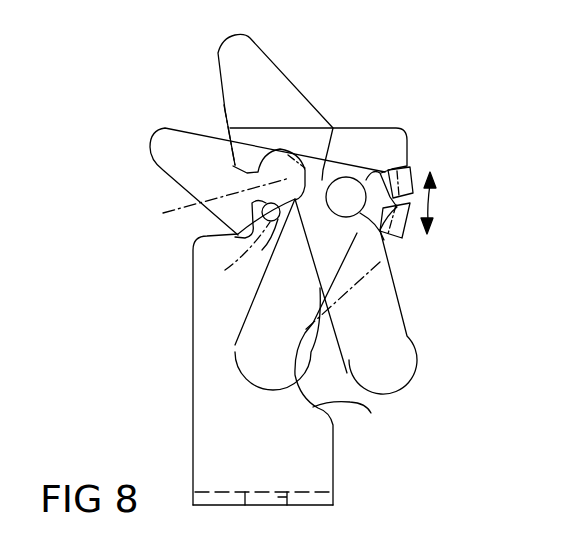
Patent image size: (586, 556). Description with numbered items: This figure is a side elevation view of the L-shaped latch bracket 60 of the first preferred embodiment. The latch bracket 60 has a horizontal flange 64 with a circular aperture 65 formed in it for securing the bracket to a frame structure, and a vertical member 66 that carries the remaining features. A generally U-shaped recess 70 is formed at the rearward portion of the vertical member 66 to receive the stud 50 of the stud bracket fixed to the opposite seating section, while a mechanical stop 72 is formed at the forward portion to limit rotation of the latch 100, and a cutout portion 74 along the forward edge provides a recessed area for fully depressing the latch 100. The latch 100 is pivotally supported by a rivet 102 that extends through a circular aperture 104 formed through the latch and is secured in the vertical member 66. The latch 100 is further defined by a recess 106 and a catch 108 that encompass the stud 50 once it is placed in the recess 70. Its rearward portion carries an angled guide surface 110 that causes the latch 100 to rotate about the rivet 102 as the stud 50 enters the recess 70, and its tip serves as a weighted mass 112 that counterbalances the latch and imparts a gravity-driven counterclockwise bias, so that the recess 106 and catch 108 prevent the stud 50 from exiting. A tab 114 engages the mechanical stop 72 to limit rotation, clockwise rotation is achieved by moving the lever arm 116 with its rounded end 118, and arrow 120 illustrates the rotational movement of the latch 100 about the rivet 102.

The latch bracket 60 is at (122, 103).
The vertical member 66 is at (193, 397).
The horizontal flange 64 is at (217, 507).
The circular aperture 65 is at (275, 507).
The cutout portion 74 is at (371, 413).
The U-shaped recess 70 is at (270, 177).
The weighted mass 112 is at (175, 148).
The angled guide surface 110 is at (182, 184).
The latch 100 is at (338, 118).
The rivet 102 is at (347, 197).
The lever arm 116 is at (373, 328).
The rounded end 118 is at (403, 362).
The circular aperture 104 is at (383, 236).
The mechanical stop 72 is at (403, 171).
The tab 114 is at (408, 180).
The arrow 120 is at (434, 207).
The recess 106 is at (262, 212).
The catch 108 is at (245, 238).
The stud 50 is at (225, 270).